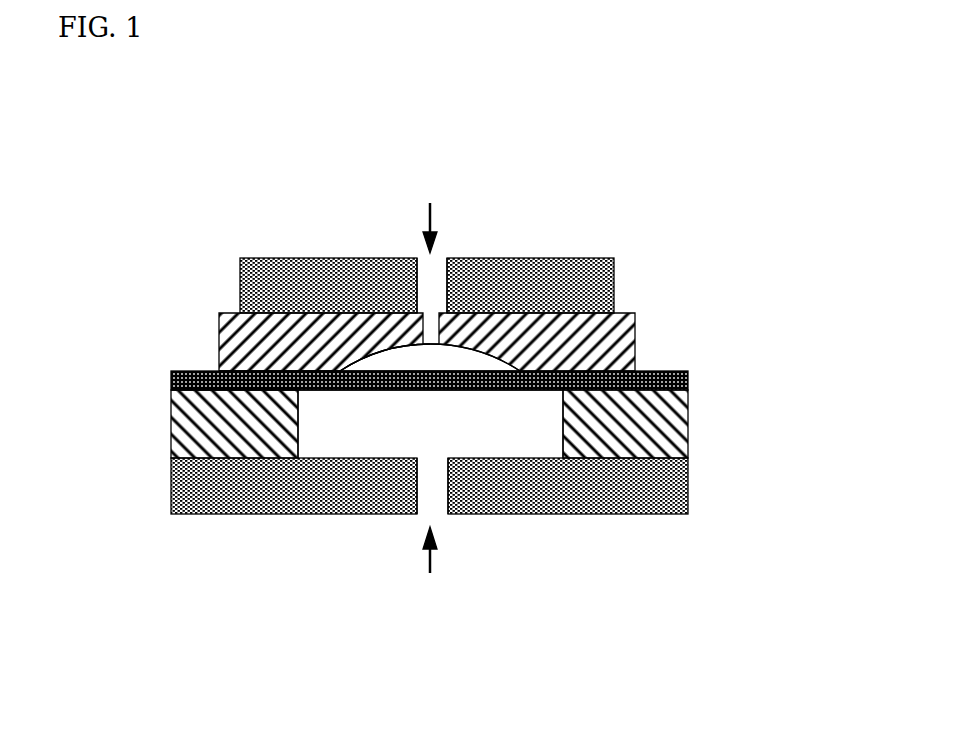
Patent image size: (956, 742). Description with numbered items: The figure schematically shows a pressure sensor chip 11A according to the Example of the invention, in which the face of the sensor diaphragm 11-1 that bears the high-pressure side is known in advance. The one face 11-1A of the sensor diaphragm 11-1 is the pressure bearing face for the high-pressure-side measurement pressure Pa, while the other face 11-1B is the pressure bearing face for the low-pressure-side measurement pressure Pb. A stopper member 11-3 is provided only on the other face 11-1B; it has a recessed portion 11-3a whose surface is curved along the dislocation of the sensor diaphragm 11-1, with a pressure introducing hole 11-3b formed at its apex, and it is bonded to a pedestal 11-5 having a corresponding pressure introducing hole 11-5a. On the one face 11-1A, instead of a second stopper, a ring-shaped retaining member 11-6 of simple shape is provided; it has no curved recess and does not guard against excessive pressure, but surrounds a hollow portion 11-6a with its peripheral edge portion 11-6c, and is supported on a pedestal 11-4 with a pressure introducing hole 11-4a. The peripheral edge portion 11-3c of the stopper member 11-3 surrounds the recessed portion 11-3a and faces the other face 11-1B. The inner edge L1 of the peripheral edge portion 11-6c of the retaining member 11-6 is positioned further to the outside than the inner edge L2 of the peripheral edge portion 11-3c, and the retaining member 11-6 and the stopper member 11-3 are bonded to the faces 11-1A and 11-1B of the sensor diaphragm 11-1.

The pressure sensor chip 11A is at (633, 240).
The sensor diaphragm 11-1 is at (689, 376).
The one face of the sensor diaphragm 11-1A is at (455, 392).
The other face of the sensor diaphragm 11-1B is at (440, 371).
The stopper member 11-3 is at (636, 327).
The recessed portion 11-3a is at (480, 352).
The pressure introducing hole 11-3b is at (363, 357).
The peripheral edge portion of the stopper member 11-3c is at (265, 366).
The pedestal 11-4 is at (183, 490).
The pressure introducing hole 11-4a is at (434, 497).
The pedestal 11-5 is at (616, 265).
The pressure introducing hole 11-5a is at (433, 274).
The retaining member 11-6 is at (689, 432).
The hollow portion 11-6a is at (369, 437).
The peripheral edge portion of the retaining member 11-6c is at (240, 393).
The inner edge of the peripheral edge portion of the retaining member L1 is at (297, 392).
The inner edge of the peripheral edge portion of the stopper member L2 is at (355, 371).
The measurement pressure Pa is at (430, 568).
The measurement pressure Pb is at (433, 211).